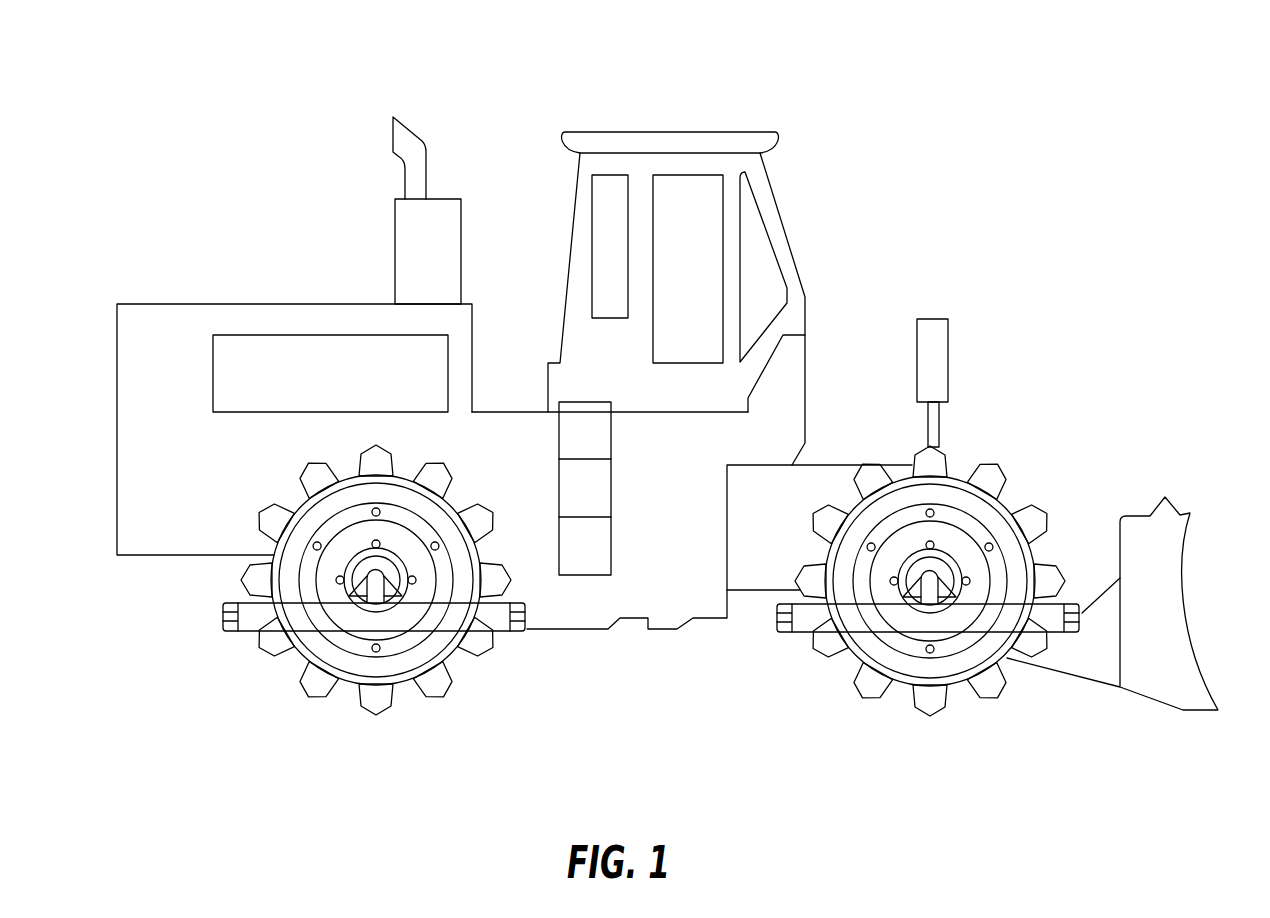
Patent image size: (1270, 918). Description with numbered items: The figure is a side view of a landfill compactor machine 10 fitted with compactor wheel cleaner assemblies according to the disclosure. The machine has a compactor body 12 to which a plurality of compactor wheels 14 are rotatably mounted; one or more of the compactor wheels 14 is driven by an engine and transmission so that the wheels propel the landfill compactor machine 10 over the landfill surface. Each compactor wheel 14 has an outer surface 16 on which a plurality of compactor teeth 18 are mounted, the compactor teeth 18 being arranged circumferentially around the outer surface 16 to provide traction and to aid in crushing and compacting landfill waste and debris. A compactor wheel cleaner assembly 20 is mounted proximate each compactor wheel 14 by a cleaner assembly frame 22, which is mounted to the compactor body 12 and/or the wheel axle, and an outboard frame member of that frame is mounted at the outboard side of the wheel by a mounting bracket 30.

The landfill compactor machine 10 is at (266, 80).
The compactor body 12 is at (250, 312).
The compactor wheel 14 is at (276, 484).
The outer surface 16 is at (347, 688).
The compactor teeth 18 is at (430, 698).
The compactor wheel cleaner assembly 20 is at (208, 620).
The cleaner assembly frame 22 is at (251, 625).
The mounting bracket 30 is at (378, 590).